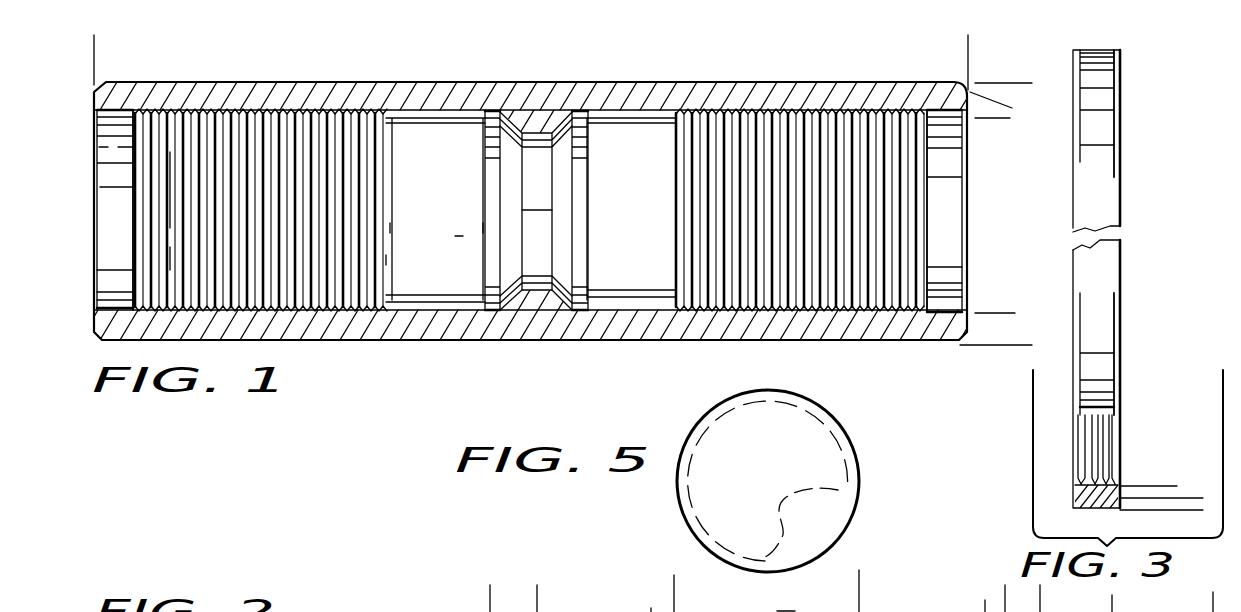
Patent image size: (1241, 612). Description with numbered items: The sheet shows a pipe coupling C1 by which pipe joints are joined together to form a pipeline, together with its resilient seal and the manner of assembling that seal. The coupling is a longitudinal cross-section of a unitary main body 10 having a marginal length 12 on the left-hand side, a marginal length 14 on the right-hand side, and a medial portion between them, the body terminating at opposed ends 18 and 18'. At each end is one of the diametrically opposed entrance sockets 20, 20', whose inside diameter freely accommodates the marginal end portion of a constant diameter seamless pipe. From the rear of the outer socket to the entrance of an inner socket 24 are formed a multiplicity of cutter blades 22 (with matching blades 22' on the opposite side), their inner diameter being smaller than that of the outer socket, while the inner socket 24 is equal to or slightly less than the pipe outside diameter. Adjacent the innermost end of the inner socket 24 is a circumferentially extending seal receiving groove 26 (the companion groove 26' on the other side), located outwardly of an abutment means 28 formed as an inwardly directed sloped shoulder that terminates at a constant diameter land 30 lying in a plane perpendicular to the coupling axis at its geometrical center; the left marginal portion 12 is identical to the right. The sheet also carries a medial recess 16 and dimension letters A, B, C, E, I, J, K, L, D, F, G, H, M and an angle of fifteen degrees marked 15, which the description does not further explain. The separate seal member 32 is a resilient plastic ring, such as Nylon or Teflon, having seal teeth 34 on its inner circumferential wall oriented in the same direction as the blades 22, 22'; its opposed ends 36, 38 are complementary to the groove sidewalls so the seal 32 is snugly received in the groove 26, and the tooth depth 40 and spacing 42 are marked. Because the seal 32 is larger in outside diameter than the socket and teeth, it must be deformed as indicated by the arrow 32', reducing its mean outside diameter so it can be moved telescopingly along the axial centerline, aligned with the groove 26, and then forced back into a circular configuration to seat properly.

In FIG. 1, the unitary main body 10 is at (610, 80).
In FIG. 1, the marginal length 12 is at (266, 80).
In FIG. 1, the marginal length 14 is at (882, 83).
In FIG. 1, the annular groove 16 is at (556, 203).
In FIG. 1, the opposed end 18 is at (961, 210).
In FIG. 1, the opposed end 18' is at (100, 210).
In FIG. 1, the entrance socket 20 is at (960, 279).
In FIG. 1, the entrance socket 20' is at (97, 273).
In FIG. 1, the cutter blades 22 is at (937, 210).
In FIG. 1, the cutter blades 22' is at (117, 210).
In FIG. 1, the inner socket 24 is at (438, 261).
In FIG. 1, the seal receiving groove 26 is at (601, 210).
In FIG. 1, the annular rib 26' is at (467, 210).
In FIG. 1, the abutment means 28 is at (558, 300).
In FIG. 1, the constant diameter land 30 is at (530, 222).
In FIG. 2, the constant diameter land 30 is at (777, 611).
In FIG. 3, the seal member 32 is at (1123, 279).
In FIG. 5, the seal member 32 is at (791, 481).
In FIG. 5, the deformation arrow 32' is at (799, 481).
In FIG. 3, the seal teeth 34 is at (1102, 483).
In FIG. 3, the opposed end 36 is at (1122, 172).
In FIG. 3, the opposed end 38 is at (1073, 197).
In FIG. 3, the thread depth 40 is at (1166, 530).
In FIG. 3, the clearance 42 is at (1192, 530).
In FIG. 1, the overall length dimension A is at (968, 45).
In FIG. 1, the outer diameter dimension B is at (1023, 345).
In FIG. 1, the collar diameter dimension C is at (1002, 313).
In FIG. 1, the coupling C1 is at (448, 77).
In FIG. 1, the chamfer angle 15 is at (1005, 82).
In FIG. 1, the unthreaded section length E is at (483, 228).
In FIG. 1, the collar width dimension I is at (170, 147).
In FIG. 2, the collar width dimension I is at (1213, 605).
In FIG. 1, the thread length dimension J is at (386, 260).
In FIG. 1, the thread depth dimension K is at (135, 113).
In FIG. 1, the rib width dimension L is at (457, 228).
In FIG. 2, the rib width dimension L is at (490, 599).
In FIG. 2, the groove depth dimension D is at (651, 555).
In FIG. 2, the groove spacing dimension F is at (859, 589).
In FIG. 2, the rib dimension G is at (580, 599).
In FIG. 2, the groove width dimension H is at (1005, 589).
In FIG. 2, the groove bottom width dimension M is at (859, 607).